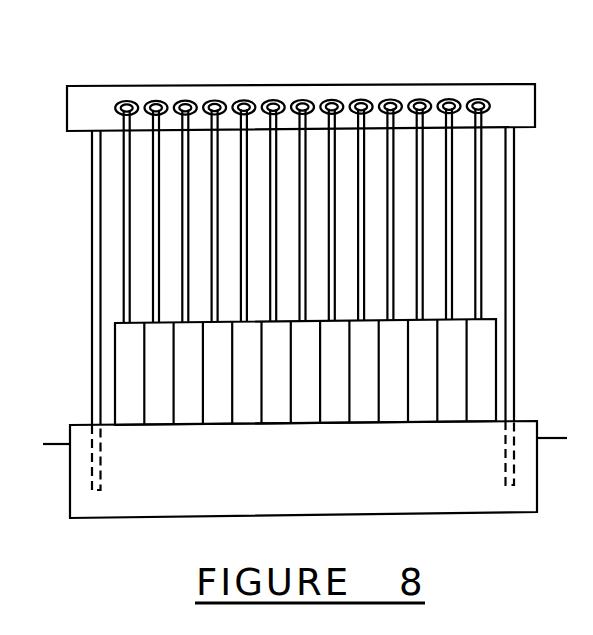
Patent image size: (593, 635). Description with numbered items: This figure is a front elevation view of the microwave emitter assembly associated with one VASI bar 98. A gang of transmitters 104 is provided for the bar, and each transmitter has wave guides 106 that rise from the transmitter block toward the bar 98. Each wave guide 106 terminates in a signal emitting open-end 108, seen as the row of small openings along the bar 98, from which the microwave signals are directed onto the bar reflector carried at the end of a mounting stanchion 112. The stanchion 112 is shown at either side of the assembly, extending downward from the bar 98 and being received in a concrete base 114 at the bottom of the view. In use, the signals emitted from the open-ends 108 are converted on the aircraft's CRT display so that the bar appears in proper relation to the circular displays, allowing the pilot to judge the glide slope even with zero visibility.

The bar 98 is at (510, 103).
The signal emitting open-end 108 is at (178, 104).
The wave guides 106 is at (155, 195).
The mounting stanchion 112 is at (92, 266).
The gang of transmitters 104 is at (128, 367).
The concrete base 114 is at (158, 493).